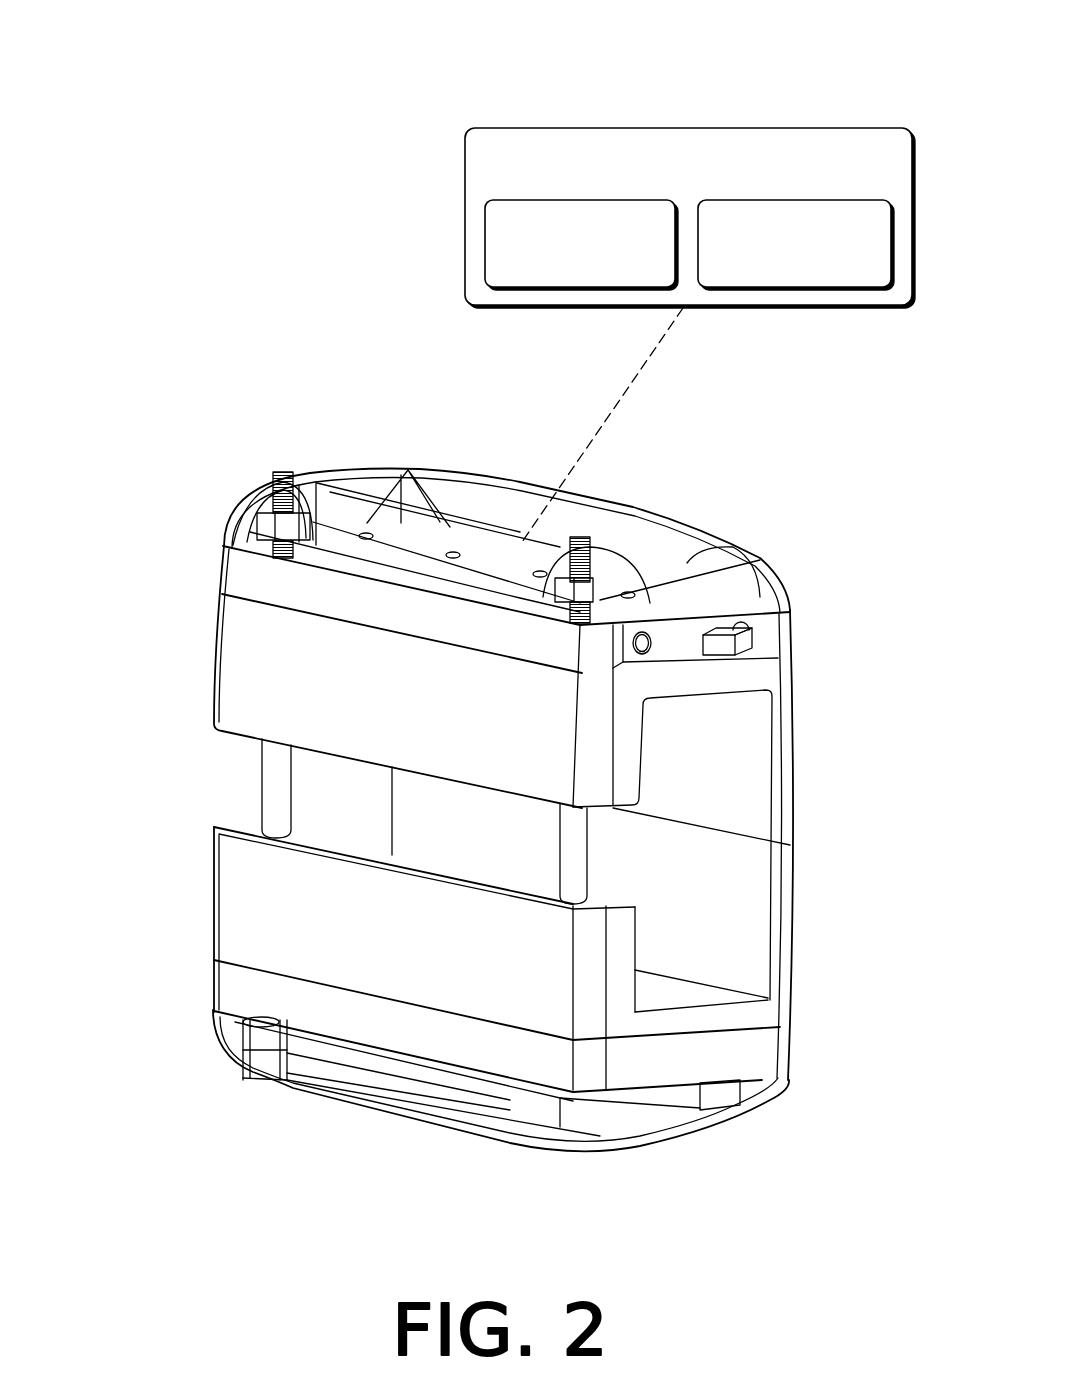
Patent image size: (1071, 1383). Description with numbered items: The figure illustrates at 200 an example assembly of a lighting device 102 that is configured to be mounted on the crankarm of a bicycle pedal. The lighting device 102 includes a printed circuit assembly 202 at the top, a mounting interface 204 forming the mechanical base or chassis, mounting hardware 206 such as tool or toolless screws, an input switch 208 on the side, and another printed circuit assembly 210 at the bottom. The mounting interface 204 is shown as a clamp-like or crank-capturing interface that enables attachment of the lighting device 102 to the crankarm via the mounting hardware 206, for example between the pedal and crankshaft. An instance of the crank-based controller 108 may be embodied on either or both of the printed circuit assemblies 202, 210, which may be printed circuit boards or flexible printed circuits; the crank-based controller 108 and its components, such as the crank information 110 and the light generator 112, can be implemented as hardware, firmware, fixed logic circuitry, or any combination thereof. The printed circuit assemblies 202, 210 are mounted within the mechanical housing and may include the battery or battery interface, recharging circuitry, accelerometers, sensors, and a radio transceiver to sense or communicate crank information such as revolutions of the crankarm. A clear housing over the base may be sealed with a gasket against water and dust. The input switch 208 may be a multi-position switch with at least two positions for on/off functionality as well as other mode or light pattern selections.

The example assembly 200 is at (139, 58).
The lighting device 102 is at (692, 402).
The crank-based controller 108 is at (672, 186).
The crank information 110 is at (562, 279).
The light generator 112 is at (776, 268).
The printed circuit assembly 202 is at (720, 580).
The mounting interface 204 is at (815, 897).
The mounting hardware 206 is at (268, 462).
The input switch 208 is at (765, 648).
The printed circuit assembly 210 is at (697, 1120).